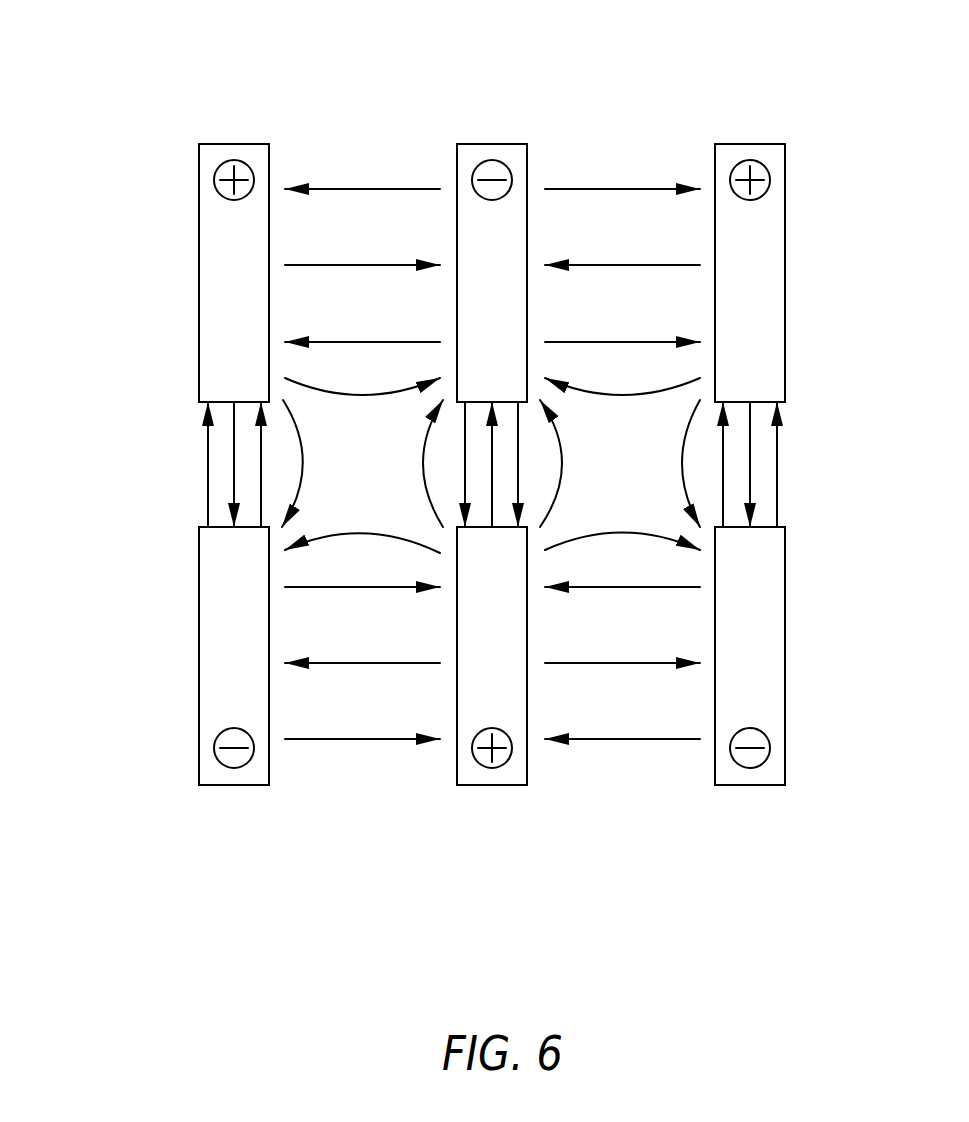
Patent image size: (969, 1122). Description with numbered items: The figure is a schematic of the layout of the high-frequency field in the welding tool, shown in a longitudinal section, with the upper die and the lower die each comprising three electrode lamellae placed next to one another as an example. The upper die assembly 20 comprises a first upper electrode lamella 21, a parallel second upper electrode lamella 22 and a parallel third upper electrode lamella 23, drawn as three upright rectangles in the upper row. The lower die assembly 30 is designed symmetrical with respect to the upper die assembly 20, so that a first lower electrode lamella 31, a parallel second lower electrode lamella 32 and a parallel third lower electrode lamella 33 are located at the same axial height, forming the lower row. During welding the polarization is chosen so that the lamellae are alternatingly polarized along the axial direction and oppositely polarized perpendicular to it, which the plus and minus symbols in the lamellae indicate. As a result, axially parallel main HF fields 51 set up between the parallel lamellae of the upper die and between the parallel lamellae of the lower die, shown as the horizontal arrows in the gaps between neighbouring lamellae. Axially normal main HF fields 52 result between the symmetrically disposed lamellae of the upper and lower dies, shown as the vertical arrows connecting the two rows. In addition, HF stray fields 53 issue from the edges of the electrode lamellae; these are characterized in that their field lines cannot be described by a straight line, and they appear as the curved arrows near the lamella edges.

The upper die assembly 20 is at (183, 276).
The first upper electrode lamella 21 is at (234, 144).
The second upper electrode lamella 22 is at (492, 144).
The third upper electrode lamella 23 is at (750, 144).
The lower die assembly 30 is at (183, 678).
The first lower electrode lamella 31 is at (234, 785).
The second lower electrode lamella 32 is at (492, 785).
The third lower electrode lamella 33 is at (750, 785).
The axially parallel main HF field 51 is at (370, 165).
The axially normal main HF field 52 is at (200, 472).
The HF stray field 53 is at (355, 473).